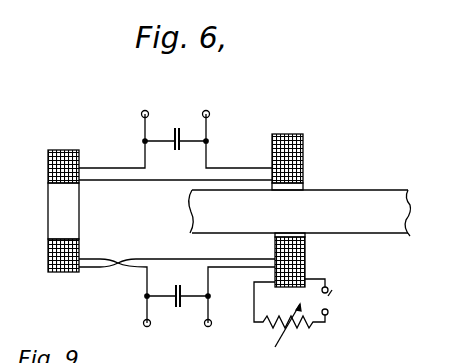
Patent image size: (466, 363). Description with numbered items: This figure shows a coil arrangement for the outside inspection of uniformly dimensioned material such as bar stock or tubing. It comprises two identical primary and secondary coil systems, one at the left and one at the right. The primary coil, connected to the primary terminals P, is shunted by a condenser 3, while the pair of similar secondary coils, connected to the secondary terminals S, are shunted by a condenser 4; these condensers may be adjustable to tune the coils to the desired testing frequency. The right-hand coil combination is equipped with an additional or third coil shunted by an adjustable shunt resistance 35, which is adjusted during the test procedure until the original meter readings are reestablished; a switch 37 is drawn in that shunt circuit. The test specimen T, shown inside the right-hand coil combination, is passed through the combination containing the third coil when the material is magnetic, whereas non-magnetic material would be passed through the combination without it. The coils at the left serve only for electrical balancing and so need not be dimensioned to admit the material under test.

The condenser 3 is at (177, 128).
The condenser 4 is at (177, 286).
The shunt resistance 35 is at (289, 320).
The switch 37 is at (330, 300).
The primary terminals P is at (202, 111).
The secondary terminals S is at (205, 327).
The test specimen T is at (366, 192).